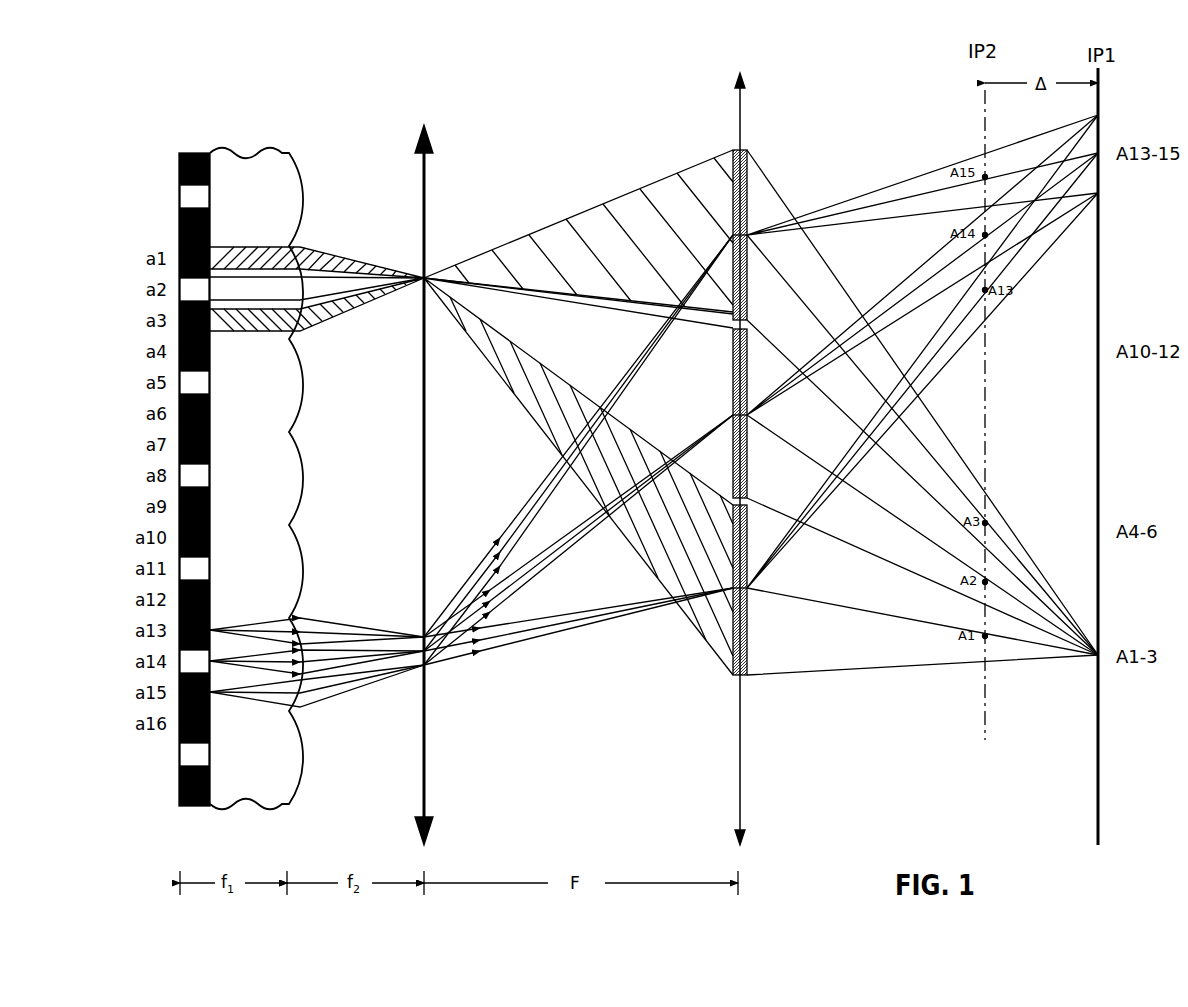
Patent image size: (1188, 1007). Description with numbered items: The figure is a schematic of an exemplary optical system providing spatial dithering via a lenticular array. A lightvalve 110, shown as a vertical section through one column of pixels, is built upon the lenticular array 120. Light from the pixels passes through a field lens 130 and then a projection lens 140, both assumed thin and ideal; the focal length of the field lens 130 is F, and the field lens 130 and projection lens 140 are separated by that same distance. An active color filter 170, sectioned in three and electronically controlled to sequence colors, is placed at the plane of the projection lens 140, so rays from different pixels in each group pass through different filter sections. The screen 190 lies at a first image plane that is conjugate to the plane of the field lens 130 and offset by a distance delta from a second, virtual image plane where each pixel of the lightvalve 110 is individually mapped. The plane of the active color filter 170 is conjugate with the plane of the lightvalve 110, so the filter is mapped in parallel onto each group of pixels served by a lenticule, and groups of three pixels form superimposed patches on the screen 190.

The lightvalve 110 is at (139, 449).
The lenticular array 120 is at (303, 140).
The field lens 130 is at (436, 192).
The projection lens 140 is at (746, 443).
The active color filter 170 is at (726, 290).
The screen 190 is at (1094, 746).